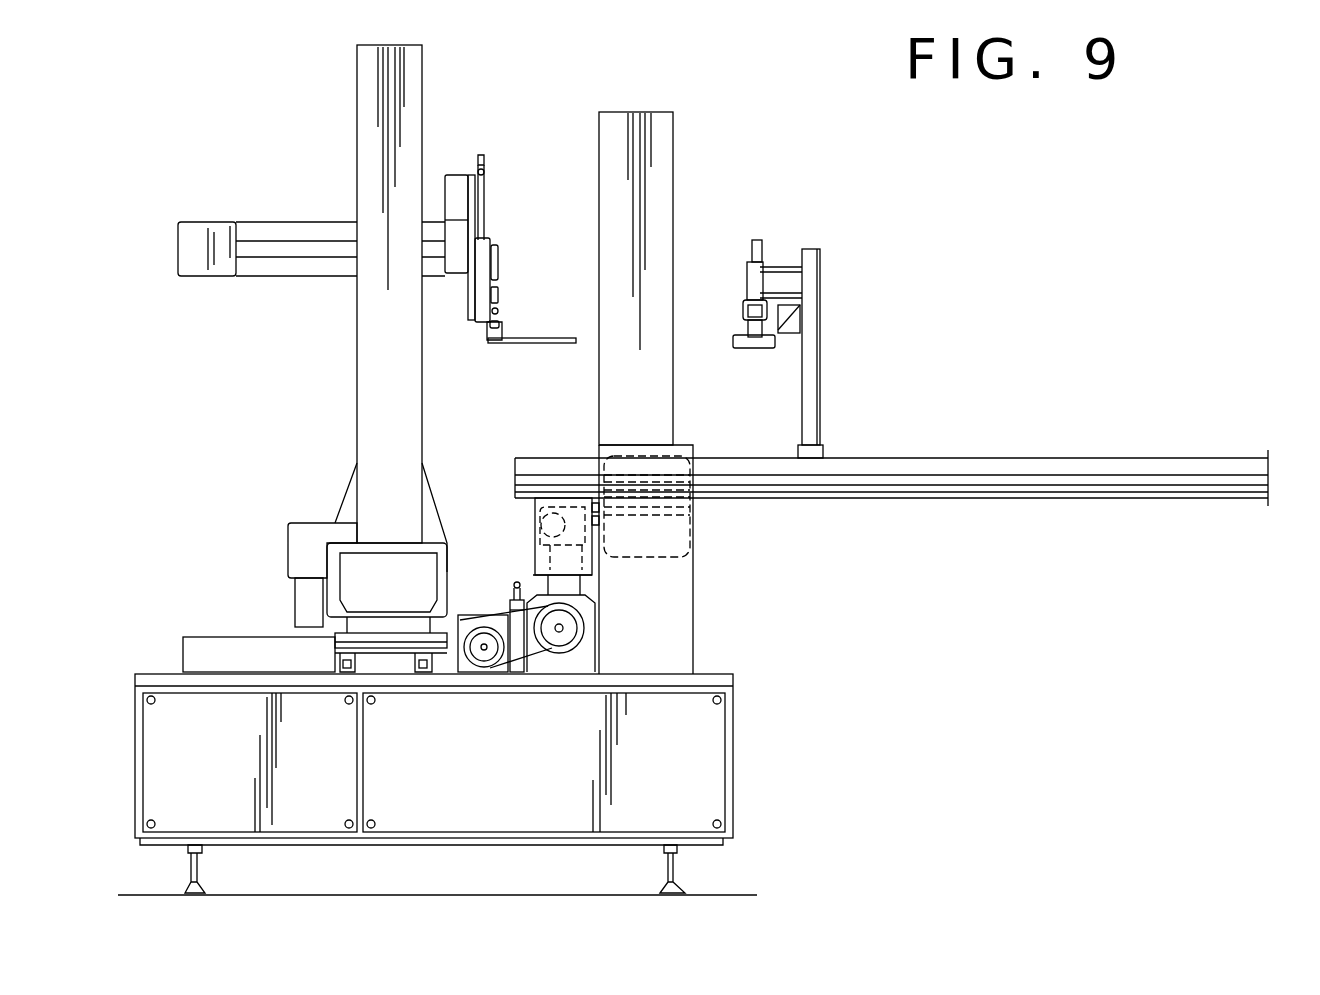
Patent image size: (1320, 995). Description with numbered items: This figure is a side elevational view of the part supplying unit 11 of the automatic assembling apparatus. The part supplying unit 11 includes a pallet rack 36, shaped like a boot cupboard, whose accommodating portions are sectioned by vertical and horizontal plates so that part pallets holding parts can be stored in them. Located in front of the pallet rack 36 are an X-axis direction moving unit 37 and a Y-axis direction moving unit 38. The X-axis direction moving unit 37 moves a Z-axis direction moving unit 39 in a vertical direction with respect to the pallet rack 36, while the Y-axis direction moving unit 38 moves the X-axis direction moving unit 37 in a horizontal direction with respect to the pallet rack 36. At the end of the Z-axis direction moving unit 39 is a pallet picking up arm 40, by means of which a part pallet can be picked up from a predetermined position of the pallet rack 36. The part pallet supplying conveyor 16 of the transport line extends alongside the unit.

The part supplying unit 11 is at (897, 272).
The part pallet supplying conveyor 16 is at (1098, 500).
The pallet rack 36 is at (672, 165).
The X-axis direction moving unit 37 is at (412, 85).
The Y-axis direction moving unit 38 is at (355, 598).
The Z-axis direction moving unit 39 is at (305, 262).
The pallet picking up arm 40 is at (548, 345).